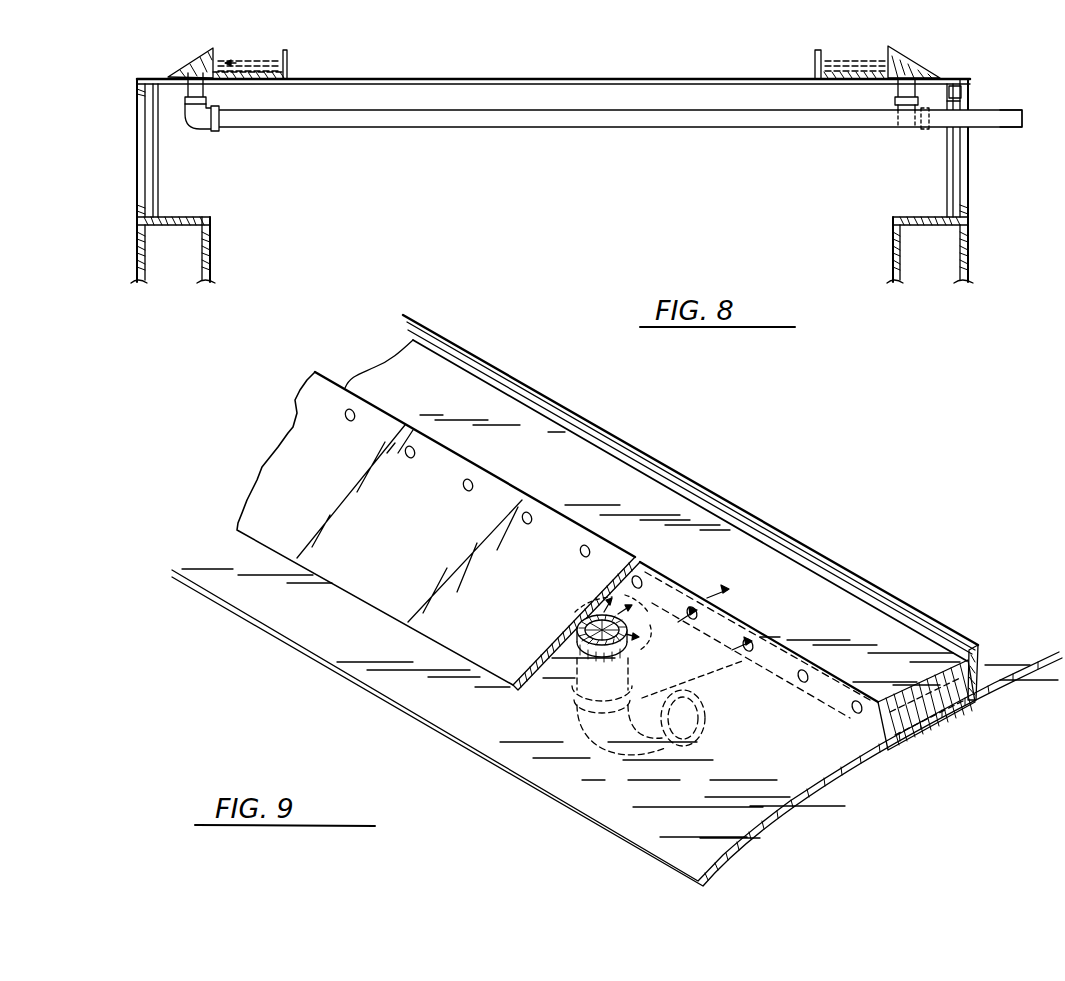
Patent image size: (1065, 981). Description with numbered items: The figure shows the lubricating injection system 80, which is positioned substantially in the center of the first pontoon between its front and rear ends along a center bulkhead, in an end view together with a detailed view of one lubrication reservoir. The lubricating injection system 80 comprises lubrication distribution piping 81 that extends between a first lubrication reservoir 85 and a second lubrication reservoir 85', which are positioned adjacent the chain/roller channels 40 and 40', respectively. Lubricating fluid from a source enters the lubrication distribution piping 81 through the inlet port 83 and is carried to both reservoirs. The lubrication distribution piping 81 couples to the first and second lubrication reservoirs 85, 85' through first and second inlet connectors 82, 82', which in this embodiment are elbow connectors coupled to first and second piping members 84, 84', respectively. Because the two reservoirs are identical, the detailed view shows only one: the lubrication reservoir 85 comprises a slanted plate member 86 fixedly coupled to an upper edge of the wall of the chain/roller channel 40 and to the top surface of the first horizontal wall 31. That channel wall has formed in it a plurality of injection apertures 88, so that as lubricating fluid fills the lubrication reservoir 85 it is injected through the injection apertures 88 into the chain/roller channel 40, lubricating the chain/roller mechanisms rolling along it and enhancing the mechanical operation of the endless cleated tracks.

In FIG. 8, the lubricating injection system 80 is at (418, 47).
In FIG. 8, the lubrication distribution piping 81 is at (691, 124).
In FIG. 8, the first inlet connector 82 is at (912, 142).
In FIG. 9, the first inlet connector 82 is at (646, 754).
In FIG. 8, the second inlet connector 82' is at (212, 138).
In FIG. 8, the inlet port 83 is at (1015, 118).
In FIG. 9, the first piping member 84 is at (552, 668).
In FIG. 8, the second piping member 84' is at (238, 93).
In FIG. 8, the first lubrication reservoir 85 is at (933, 57).
In FIG. 8, the second lubrication reservoir 85' is at (184, 49).
In FIG. 8, the chain/roller channel 40 is at (835, 69).
In FIG. 9, the chain/roller channel 40 is at (734, 582).
In FIG. 8, the chain/roller channel 40' is at (269, 44).
In FIG. 9, the slanted plate member 86 is at (303, 447).
In FIG. 9, the injection apertures 88 is at (803, 682).
In FIG. 9, the first horizontal wall 31 is at (672, 827).